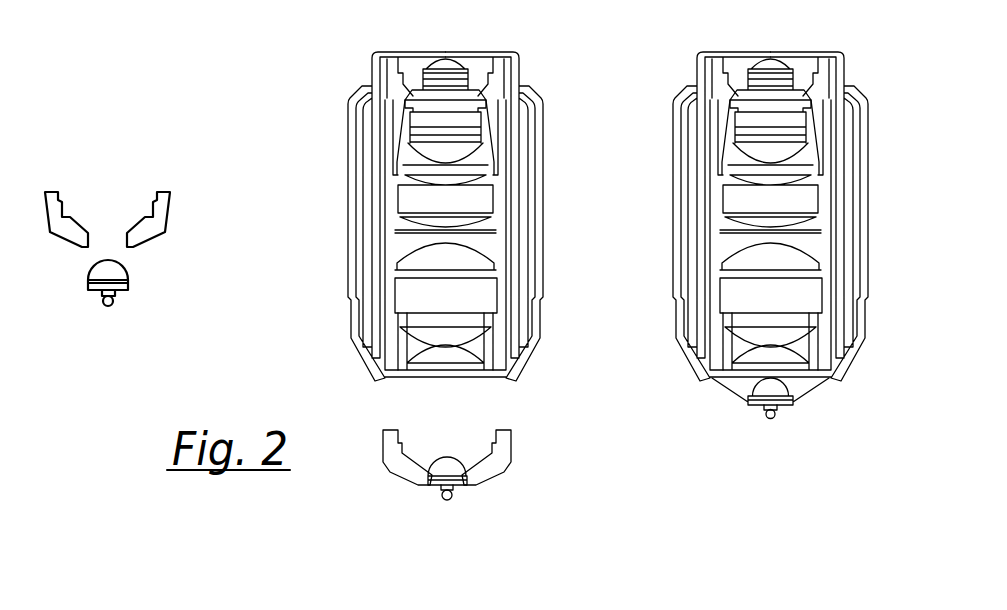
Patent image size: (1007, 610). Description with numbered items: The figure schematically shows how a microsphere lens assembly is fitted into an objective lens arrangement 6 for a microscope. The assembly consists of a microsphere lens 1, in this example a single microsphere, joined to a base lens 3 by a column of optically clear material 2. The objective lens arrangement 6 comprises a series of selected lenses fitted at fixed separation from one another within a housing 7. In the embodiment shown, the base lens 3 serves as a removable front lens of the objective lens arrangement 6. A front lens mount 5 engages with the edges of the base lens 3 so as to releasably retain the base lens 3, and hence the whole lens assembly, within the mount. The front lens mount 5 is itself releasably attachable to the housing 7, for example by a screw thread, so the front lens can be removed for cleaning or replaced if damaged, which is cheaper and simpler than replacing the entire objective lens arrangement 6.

The microsphere lens 1 is at (448, 497).
The column of optically clear material 2 is at (450, 487).
The base lens 3 is at (122, 285).
The front lens mount 5 is at (158, 223).
The objective lens arrangement 6 is at (502, 335).
The housing 7 is at (560, 128).